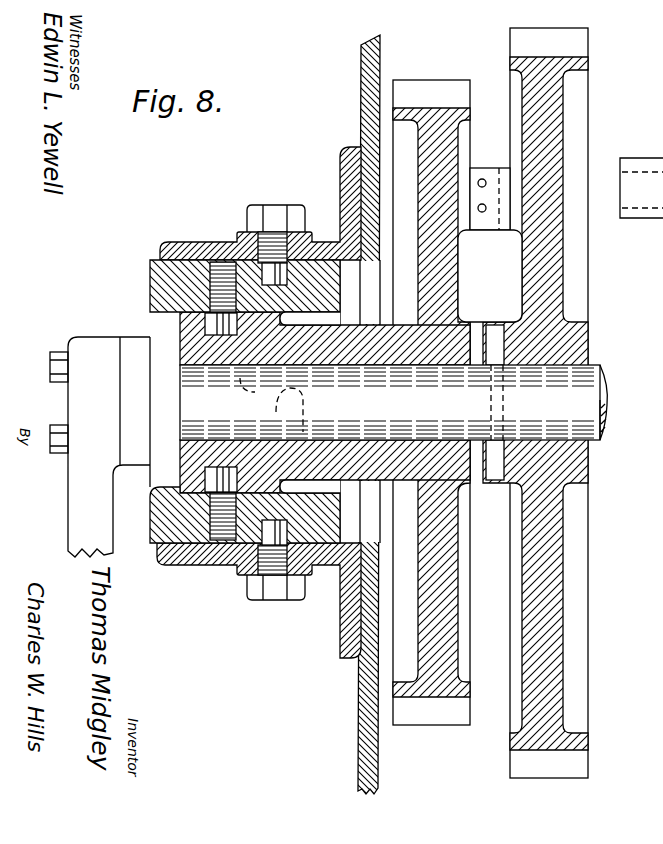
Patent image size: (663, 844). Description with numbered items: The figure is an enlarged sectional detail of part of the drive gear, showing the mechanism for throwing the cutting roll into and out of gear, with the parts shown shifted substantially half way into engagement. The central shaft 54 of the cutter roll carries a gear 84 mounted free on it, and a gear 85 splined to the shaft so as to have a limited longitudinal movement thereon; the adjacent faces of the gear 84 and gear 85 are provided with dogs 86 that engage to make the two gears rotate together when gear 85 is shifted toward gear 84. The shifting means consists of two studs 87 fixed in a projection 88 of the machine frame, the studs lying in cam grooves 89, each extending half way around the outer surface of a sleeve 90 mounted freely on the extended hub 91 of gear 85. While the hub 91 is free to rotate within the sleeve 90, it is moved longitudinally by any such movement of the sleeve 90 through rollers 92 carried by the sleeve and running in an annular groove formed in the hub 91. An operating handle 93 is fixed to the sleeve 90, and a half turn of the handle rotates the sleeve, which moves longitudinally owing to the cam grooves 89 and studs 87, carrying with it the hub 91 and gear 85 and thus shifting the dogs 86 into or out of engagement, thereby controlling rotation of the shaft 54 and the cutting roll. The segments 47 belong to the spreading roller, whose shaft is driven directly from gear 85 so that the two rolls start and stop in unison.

The segments 47 is at (641, 329).
The shaft 54 is at (593, 372).
The gear 84 is at (552, 698).
The gear 85 is at (438, 688).
The dogs 86 is at (513, 190).
The studs 87 is at (268, 278).
The projection 88 is at (178, 562).
The cam grooves 89 is at (270, 412).
The sleeve 90 is at (150, 527).
The hub 91 is at (182, 442).
The rollers 92 is at (205, 325).
The operating handle 93 is at (70, 527).